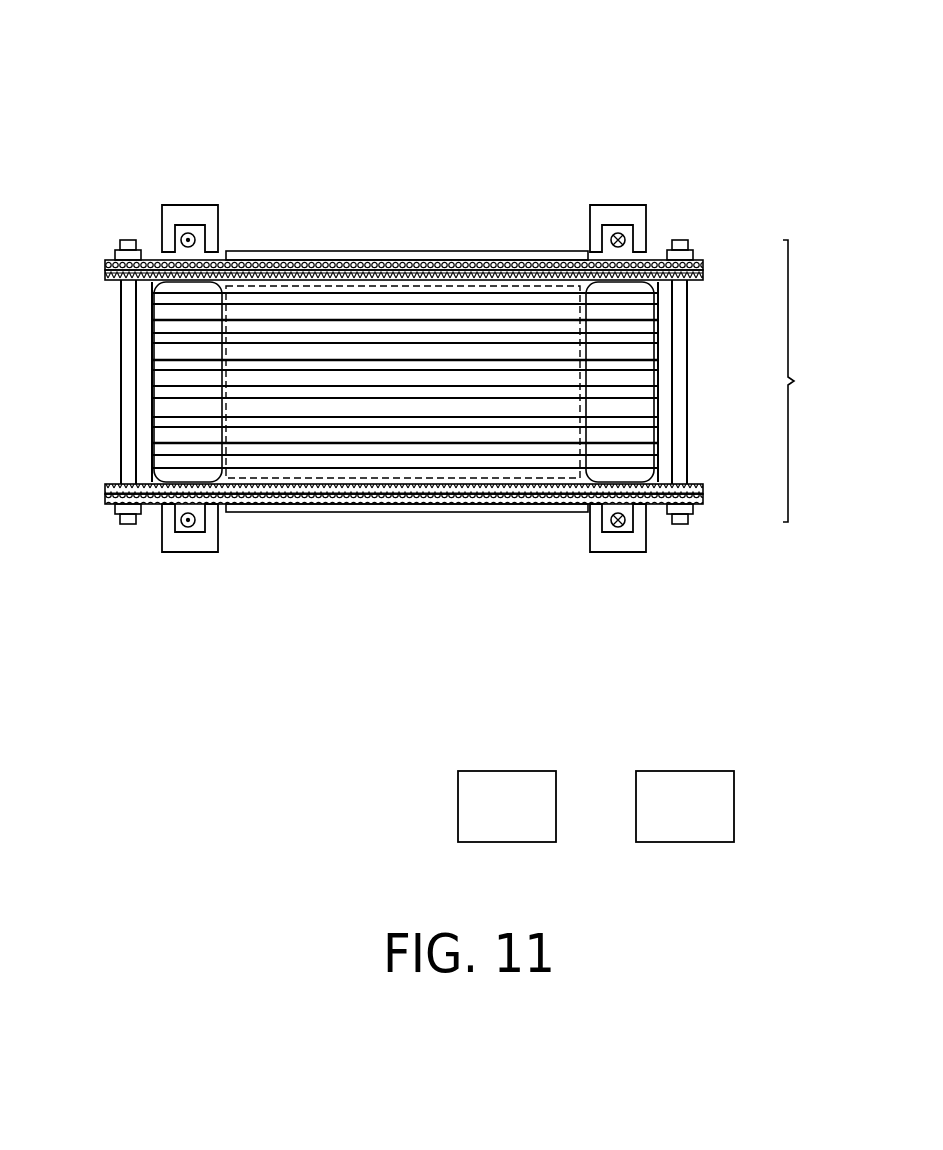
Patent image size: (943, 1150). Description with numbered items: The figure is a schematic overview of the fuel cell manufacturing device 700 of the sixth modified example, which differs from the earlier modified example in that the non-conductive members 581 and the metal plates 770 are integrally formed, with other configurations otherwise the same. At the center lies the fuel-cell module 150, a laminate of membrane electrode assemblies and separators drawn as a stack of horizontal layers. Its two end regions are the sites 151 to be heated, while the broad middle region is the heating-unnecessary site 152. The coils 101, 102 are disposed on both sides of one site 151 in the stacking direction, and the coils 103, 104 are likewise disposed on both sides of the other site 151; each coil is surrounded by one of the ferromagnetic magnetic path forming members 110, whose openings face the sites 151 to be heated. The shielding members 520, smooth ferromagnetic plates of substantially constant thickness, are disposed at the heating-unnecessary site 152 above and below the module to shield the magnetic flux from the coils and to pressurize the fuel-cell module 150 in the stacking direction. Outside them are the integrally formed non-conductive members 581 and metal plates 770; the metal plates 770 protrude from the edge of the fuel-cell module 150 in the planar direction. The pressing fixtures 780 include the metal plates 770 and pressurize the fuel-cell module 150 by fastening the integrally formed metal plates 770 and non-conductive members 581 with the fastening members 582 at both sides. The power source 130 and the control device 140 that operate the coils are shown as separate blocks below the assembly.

The fuel cell manufacturing device 700 is at (65, 32).
The magnetic path forming member 110 is at (191, 214).
The coil 101 is at (182, 235).
The coil 102 is at (180, 526).
The coil 103 is at (625, 236).
The coil 104 is at (626, 526).
The shielding member 520 is at (330, 252).
The heating-unnecessary site 152 is at (428, 285).
The site to be heated 151 is at (150, 393).
The fuel-cell module 150 is at (146, 322).
The non-conductive member 581 is at (105, 264).
The metal plate 770 is at (105, 276).
The fastening member 582 is at (118, 421).
The pressing fixture 780 is at (814, 381).
The power source 130 is at (500, 782).
The control device 140 is at (683, 782).